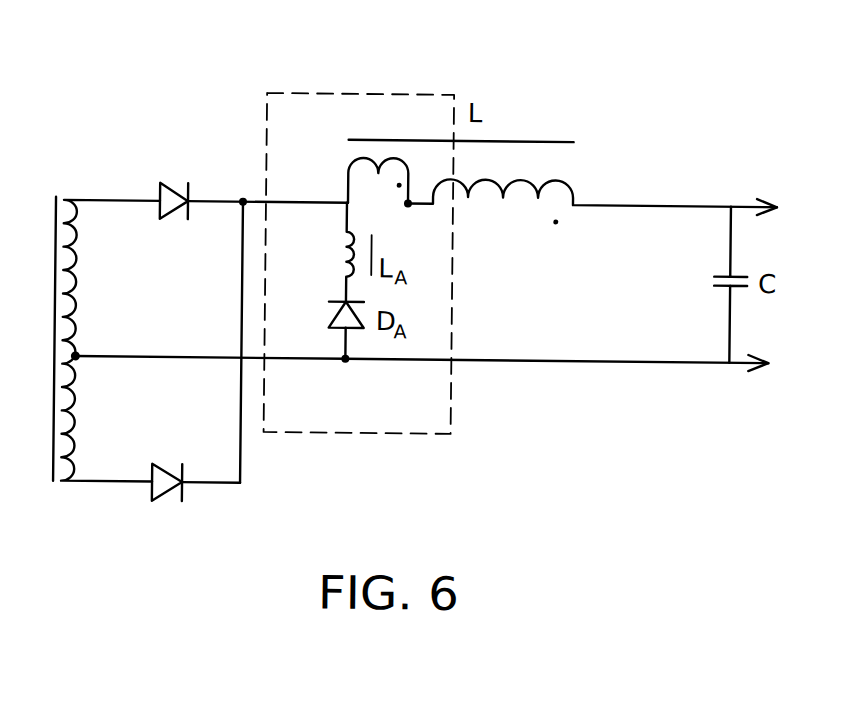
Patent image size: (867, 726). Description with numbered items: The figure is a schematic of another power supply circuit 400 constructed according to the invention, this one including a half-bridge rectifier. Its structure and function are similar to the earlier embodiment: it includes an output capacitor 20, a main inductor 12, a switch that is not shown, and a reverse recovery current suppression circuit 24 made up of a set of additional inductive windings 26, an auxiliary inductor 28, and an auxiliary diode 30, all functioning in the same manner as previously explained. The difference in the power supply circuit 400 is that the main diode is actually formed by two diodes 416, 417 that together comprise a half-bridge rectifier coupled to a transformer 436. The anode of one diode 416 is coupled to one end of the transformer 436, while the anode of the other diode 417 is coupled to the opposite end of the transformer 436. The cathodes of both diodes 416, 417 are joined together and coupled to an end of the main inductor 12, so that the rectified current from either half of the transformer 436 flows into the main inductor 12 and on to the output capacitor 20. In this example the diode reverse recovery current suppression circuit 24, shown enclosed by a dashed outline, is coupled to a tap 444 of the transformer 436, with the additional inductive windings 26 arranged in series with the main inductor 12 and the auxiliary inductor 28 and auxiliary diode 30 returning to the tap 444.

The transformer 436 is at (65, 197).
The diode 416 is at (163, 181).
The diode 417 is at (155, 468).
The tap 444 is at (80, 353).
The power supply circuit 400 is at (175, 523).
The reverse recovery current suppression circuit 24 is at (428, 85).
The set of additional inductive windings 26 is at (365, 153).
The main inductor 12 is at (574, 192).
The auxiliary inductor 28 is at (345, 253).
The auxiliary diode 30 is at (333, 317).
The output capacitor 20 is at (722, 269).